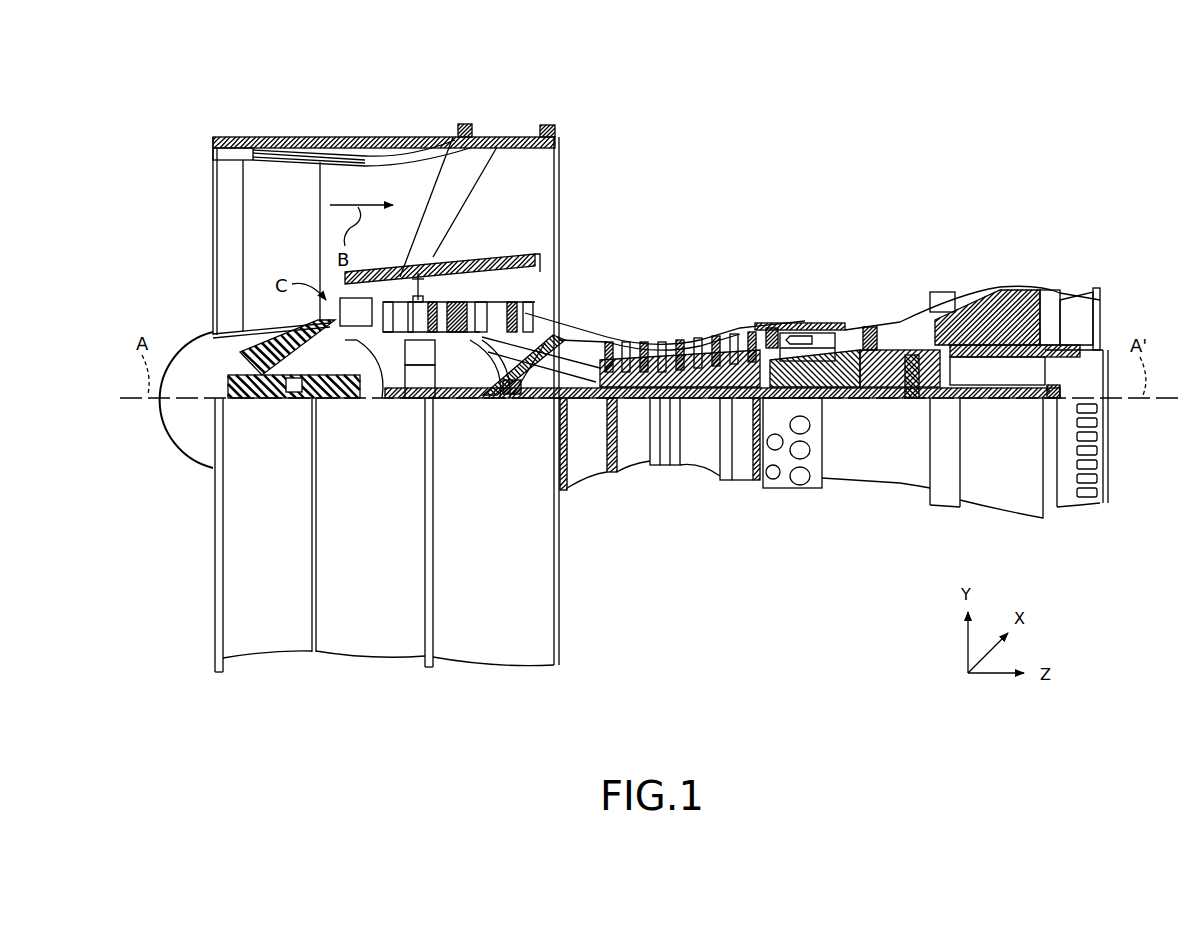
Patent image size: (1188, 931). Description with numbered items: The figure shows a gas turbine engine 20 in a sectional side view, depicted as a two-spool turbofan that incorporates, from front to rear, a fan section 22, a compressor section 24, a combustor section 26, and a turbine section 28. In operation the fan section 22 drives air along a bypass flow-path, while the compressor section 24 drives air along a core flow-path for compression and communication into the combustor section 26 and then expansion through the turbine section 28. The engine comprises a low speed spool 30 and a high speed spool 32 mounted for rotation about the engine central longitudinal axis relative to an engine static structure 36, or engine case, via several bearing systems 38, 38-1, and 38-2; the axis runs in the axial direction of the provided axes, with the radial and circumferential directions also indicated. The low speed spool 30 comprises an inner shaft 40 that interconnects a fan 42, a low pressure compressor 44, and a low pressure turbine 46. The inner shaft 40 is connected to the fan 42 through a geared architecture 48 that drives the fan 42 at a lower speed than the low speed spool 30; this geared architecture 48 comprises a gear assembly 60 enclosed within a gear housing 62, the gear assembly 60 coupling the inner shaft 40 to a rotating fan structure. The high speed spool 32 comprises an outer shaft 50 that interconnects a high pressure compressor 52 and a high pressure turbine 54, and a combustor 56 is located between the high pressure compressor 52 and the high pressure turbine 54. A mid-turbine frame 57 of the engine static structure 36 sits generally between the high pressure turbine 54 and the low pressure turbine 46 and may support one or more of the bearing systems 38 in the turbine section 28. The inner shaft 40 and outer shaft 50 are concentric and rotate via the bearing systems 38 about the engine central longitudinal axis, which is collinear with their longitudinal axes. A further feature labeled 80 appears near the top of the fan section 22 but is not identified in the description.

The gas turbine engine 20 is at (852, 130).
The fan section 22 is at (405, 124).
The compressor section 24 is at (430, 232).
The combustor section 26 is at (857, 232).
The turbine section 28 is at (1050, 232).
The low speed spool 30 is at (706, 406).
The high speed spool 32 is at (755, 330).
The engine static structure 36 is at (188, 683).
The bearing system 38 is at (913, 365).
The bearing system 38-1 is at (295, 386).
The bearing system 38-2 is at (518, 390).
The inner shaft 40 is at (575, 400).
The fan 42 is at (284, 252).
The low pressure compressor 44 is at (478, 316).
The low pressure turbine 46 is at (987, 292).
The geared architecture 48 is at (386, 444).
The outer shaft 50 is at (800, 392).
The high pressure compressor 52 is at (710, 335).
The high pressure turbine 54 is at (872, 330).
The combustor 56 is at (802, 336).
The mid-turbine frame 57 is at (912, 323).
The gear assembly 60 is at (407, 376).
The gear housing 62 is at (407, 353).
The nacelle fitting 80 is at (466, 122).